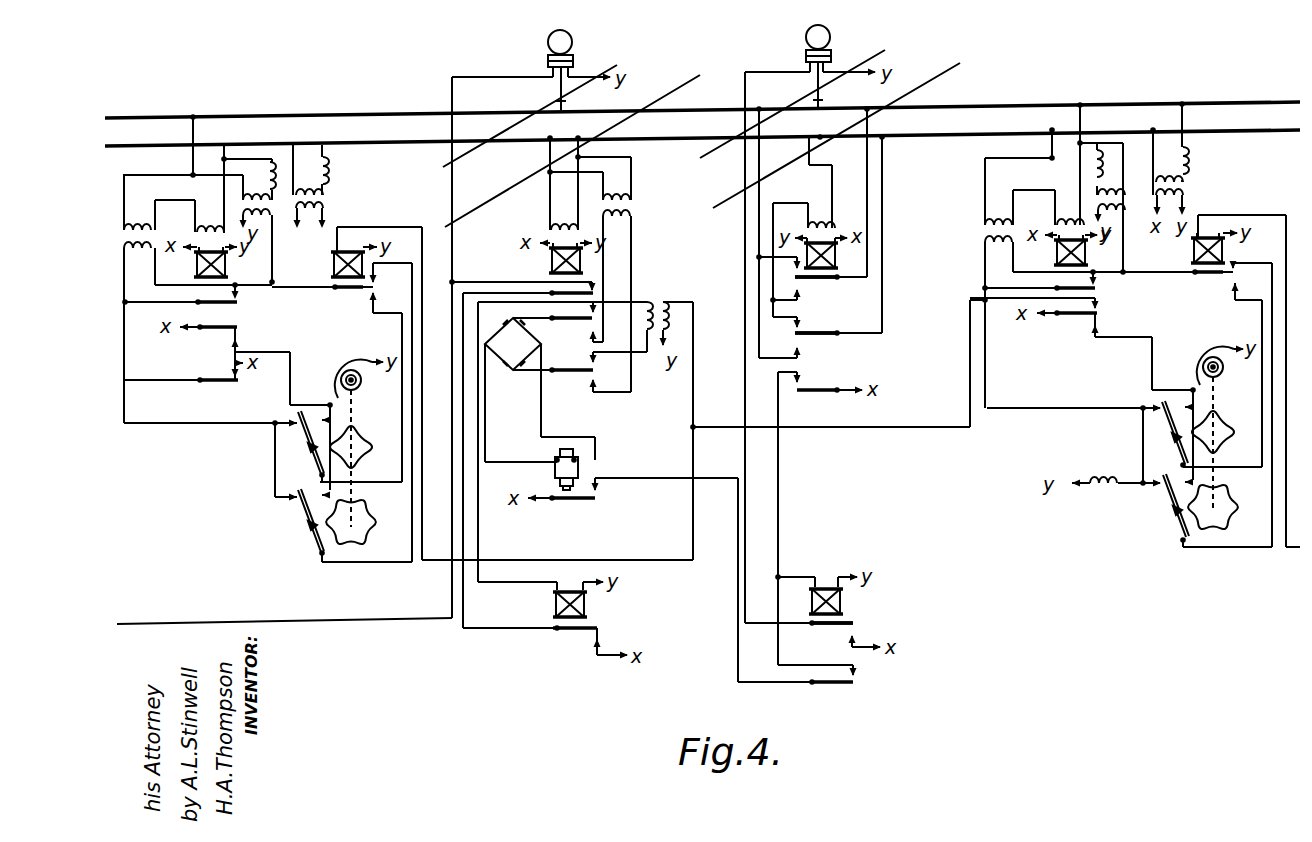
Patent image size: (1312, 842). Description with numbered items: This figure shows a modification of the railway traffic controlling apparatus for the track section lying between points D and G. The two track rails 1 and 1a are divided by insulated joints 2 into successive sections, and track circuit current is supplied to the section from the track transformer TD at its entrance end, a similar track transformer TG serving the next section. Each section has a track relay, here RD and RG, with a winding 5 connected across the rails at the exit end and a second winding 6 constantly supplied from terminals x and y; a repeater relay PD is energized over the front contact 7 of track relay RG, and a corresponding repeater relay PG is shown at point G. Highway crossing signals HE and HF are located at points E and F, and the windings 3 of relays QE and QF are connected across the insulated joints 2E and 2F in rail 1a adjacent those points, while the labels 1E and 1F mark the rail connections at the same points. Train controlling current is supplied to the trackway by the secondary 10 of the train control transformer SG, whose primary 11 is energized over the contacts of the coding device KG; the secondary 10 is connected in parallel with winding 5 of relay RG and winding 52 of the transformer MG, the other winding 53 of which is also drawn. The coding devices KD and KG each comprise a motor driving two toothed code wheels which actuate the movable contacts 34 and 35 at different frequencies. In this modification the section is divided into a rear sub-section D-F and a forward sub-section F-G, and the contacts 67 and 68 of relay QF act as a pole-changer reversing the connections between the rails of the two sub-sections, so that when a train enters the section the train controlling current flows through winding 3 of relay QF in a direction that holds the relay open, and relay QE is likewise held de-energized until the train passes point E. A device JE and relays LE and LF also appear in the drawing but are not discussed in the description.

The track rail 1 is at (982, 102).
The track rail 1a is at (963, 135).
The insulated joints 2 is at (280, 142).
The relay winding 3 is at (559, 228).
The track relay winding 5 is at (1066, 222).
The track relay winding 6 is at (1086, 260).
The front contact 7 is at (1076, 321).
The transformer secondary 10 is at (1114, 191).
The transformer primary 11 is at (1127, 207).
The movable contact 34 is at (1176, 448).
The movable contact member 35 is at (1177, 522).
The transformer winding 52 is at (998, 209).
The motor winding 53 is at (998, 252).
The relay contact 67 is at (814, 281).
The relay contact 68 is at (822, 335).
The section boundary point D is at (280, 116).
The section boundary point G is at (1140, 103).
The section E rail 1E is at (572, 89).
The insulated joint 2E is at (558, 122).
The section F rail 1F is at (829, 85).
The insulated joint 2F is at (828, 120).
The highway crossing signal HE is at (548, 54).
The highway crossing signal HF is at (807, 54).
The track transformer TD is at (323, 208).
The track transformer TG is at (1184, 193).
The track relay RD is at (196, 272).
The track relay RG is at (1056, 263).
The repeater relay PD is at (333, 272).
The repeater relay PG is at (1193, 255).
The relay QE is at (551, 265).
The relay QF is at (844, 256).
The coding device KD is at (337, 444).
The coding device KG is at (1209, 432).
The polarized relay E JE is at (555, 472).
The relay E LE is at (586, 612).
The relay F LF is at (842, 607).
The train control transformer SG is at (1092, 190).
The transformer MG is at (984, 233).